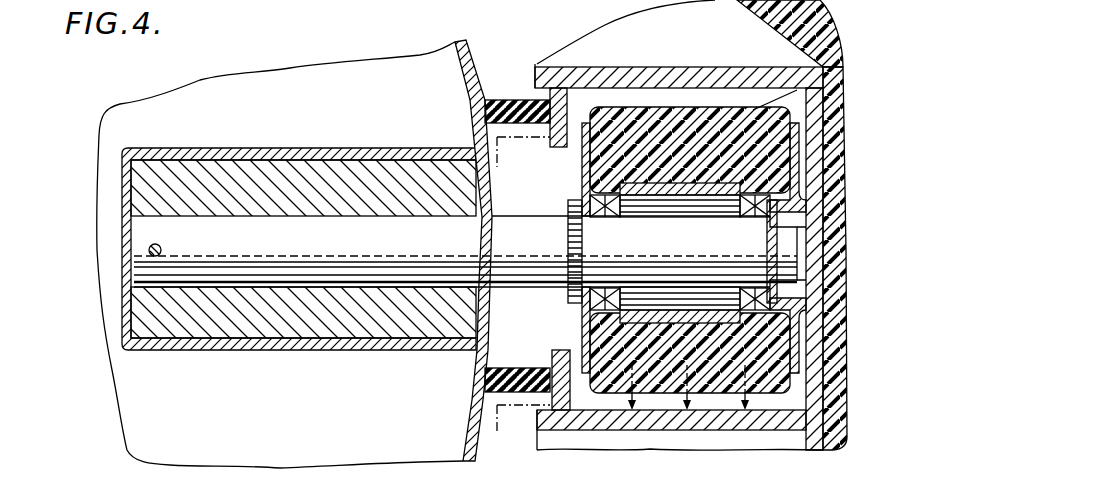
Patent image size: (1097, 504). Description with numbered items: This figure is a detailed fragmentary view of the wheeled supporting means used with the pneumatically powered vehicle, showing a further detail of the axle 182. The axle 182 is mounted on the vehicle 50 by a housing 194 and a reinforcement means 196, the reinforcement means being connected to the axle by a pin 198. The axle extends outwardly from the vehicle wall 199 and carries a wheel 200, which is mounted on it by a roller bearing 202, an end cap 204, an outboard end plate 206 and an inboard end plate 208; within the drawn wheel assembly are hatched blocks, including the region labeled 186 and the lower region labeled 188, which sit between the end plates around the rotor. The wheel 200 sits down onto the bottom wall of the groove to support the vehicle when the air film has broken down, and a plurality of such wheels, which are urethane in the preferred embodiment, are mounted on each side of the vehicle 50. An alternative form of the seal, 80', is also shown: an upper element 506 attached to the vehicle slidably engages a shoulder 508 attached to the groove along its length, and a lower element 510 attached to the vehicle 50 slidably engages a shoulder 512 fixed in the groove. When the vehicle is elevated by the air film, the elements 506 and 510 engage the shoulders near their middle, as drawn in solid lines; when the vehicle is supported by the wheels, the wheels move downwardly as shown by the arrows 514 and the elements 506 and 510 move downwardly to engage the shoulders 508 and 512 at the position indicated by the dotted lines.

The vehicle 50 is at (482, 68).
The seal 80' is at (523, 309).
The axle 182 is at (460, 290).
The stator 186 is at (742, 182).
The stator winding 188 is at (740, 317).
The housing 194 is at (340, 343).
The reinforcement means 196 is at (274, 327).
The pin 198 is at (148, 254).
The vehicle wall 199 is at (465, 53).
The wheel 200 is at (843, 69).
The roller bearing 202 is at (767, 193).
The end cap 204 is at (797, 264).
The outboard end plate 206 is at (782, 178).
The inboard end plate 208 is at (582, 183).
The upper element 506 is at (490, 100).
The shoulder 508 is at (562, 115).
The lower element 510 is at (510, 368).
The shoulder 512 is at (562, 388).
The arrows 514 is at (748, 398).